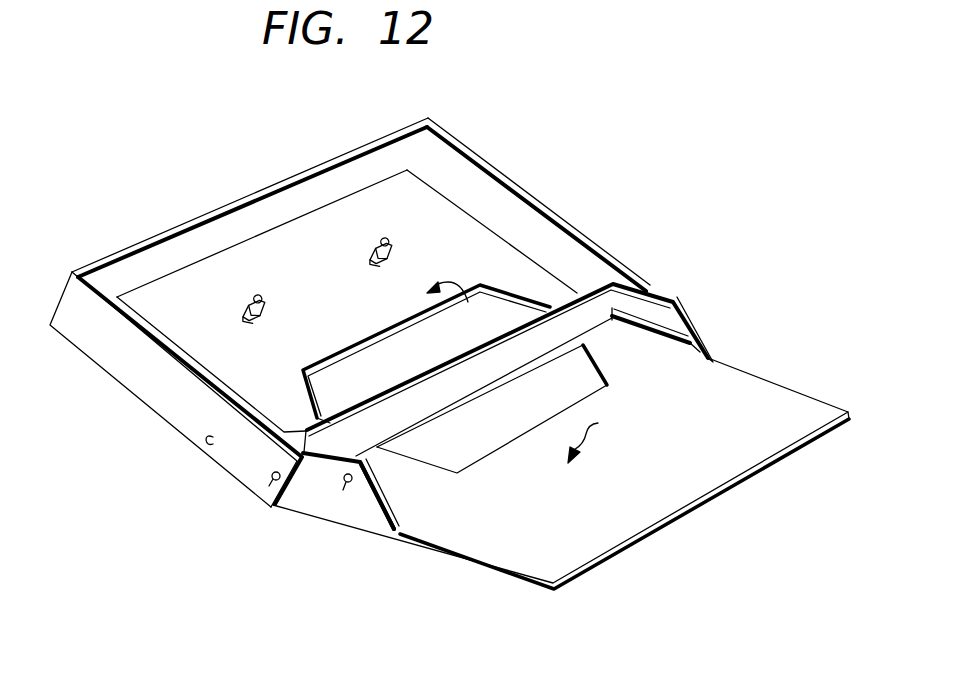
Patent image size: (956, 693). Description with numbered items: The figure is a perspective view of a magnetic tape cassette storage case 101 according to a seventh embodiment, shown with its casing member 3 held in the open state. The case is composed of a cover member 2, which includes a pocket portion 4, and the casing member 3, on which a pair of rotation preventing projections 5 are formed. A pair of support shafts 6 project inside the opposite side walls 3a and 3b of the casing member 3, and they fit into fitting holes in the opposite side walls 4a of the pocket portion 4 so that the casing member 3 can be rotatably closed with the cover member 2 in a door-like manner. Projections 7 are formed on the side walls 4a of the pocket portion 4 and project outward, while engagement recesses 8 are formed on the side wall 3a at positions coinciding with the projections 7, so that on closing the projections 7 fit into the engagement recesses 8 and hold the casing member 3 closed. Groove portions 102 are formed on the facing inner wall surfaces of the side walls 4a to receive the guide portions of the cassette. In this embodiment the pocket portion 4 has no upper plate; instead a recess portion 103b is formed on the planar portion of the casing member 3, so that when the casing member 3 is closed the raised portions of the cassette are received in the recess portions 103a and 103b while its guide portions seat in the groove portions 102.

The cassette storage case 101 is at (632, 160).
The cover member 2 is at (746, 370).
The casing member 3 is at (507, 163).
The side wall of casing member 3a is at (607, 246).
The side wall of casing member 3b is at (192, 219).
The pocket portion 4 is at (641, 295).
The side wall of pocket portion 4a is at (693, 311).
The rotation preventing projections 5 is at (360, 255).
The support shafts 6 is at (270, 484).
The projections 7 is at (345, 492).
The engagement recesses 8 is at (205, 445).
The groove portions 102 is at (677, 345).
The recess portion 103a is at (492, 447).
The recess portion 103b is at (338, 372).